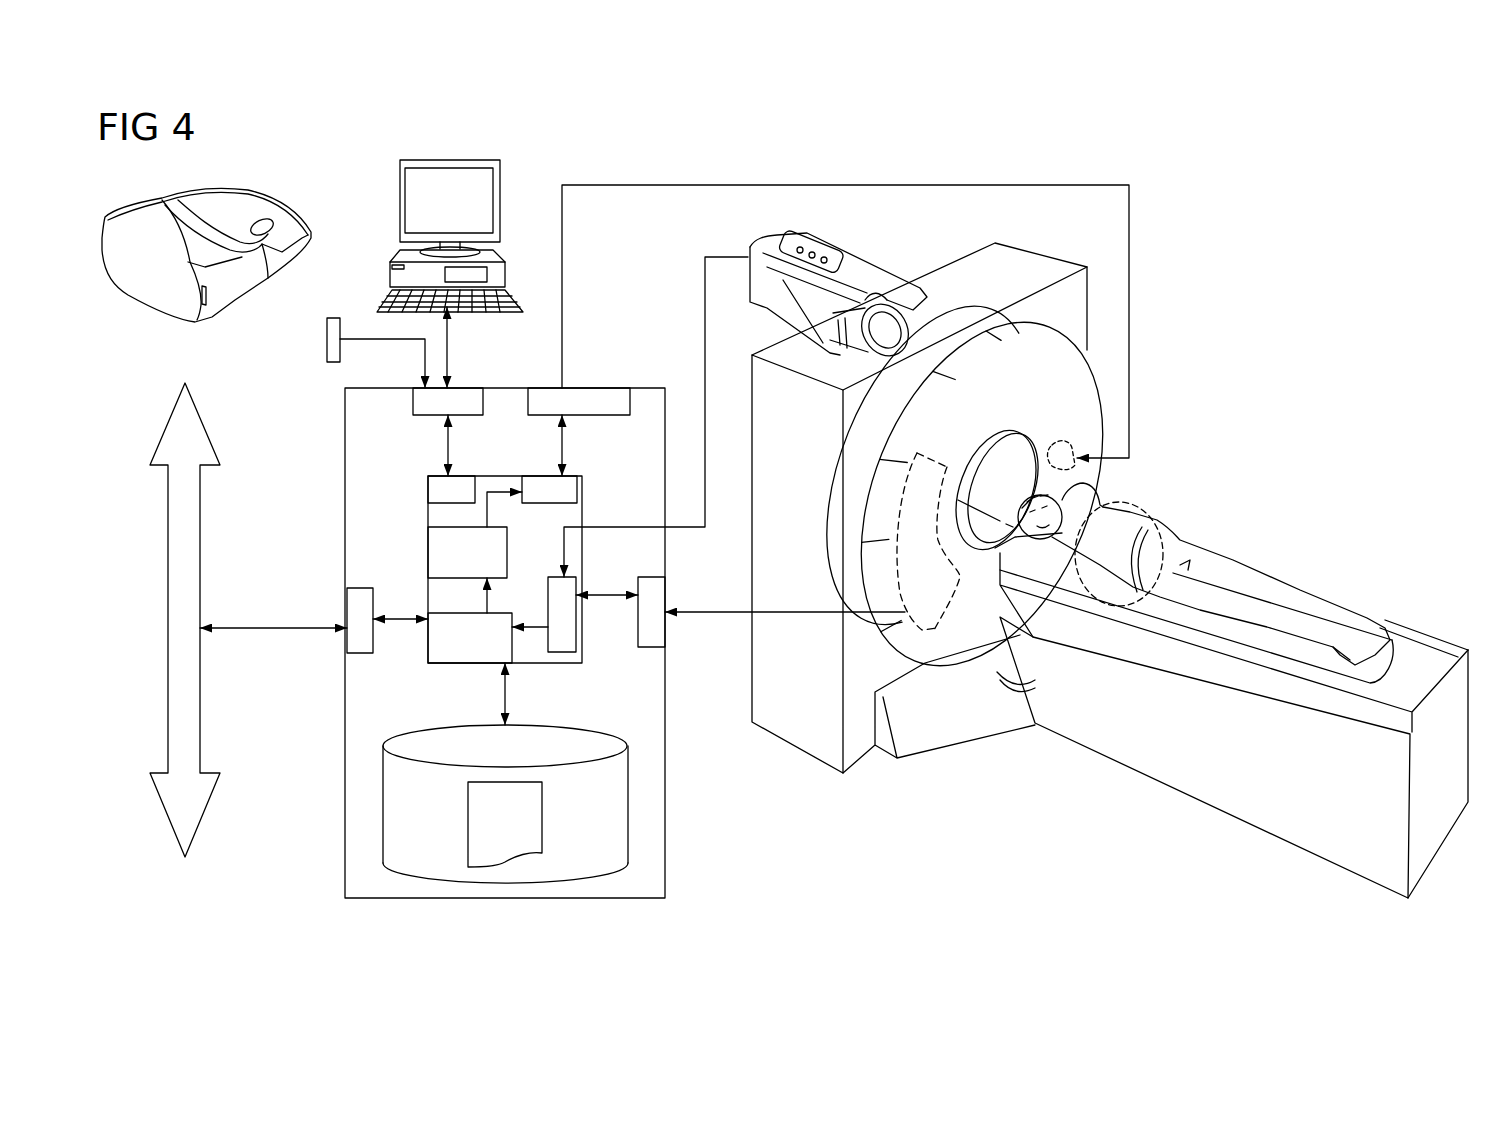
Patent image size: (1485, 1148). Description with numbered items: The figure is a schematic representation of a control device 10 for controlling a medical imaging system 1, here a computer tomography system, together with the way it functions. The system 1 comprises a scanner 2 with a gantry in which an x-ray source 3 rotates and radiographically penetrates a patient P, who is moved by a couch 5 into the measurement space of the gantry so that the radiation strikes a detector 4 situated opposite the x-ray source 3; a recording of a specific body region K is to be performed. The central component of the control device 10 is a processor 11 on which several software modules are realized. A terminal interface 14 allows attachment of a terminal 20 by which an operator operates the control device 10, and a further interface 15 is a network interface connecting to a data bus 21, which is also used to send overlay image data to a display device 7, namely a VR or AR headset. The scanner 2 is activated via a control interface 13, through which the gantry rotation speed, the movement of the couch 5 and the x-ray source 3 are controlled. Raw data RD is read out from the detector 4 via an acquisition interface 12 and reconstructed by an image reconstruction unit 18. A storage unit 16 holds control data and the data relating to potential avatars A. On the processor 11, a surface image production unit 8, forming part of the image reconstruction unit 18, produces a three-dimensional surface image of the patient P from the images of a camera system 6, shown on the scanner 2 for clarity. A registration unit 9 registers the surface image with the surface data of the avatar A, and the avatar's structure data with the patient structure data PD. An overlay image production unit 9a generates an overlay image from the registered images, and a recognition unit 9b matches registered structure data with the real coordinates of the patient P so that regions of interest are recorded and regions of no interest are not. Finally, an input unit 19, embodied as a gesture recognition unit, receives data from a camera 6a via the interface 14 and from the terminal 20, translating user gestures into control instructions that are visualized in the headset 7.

The medical imaging system 1 is at (1340, 380).
The scanner 2 is at (952, 265).
The x-ray source 3 is at (1063, 440).
The detector 4 is at (940, 596).
The couch 5 is at (1217, 805).
The camera system 6 is at (748, 258).
The camera 6a is at (327, 340).
The display device 7 is at (272, 210).
The surface image production unit 8 is at (556, 580).
The registration unit 9 is at (428, 640).
The overlay image production unit 9a is at (440, 552).
The recognition unit 9b is at (532, 478).
The control device 10 is at (505, 388).
The processor 11 is at (428, 515).
The acquisition interface 12 is at (652, 650).
The control interface 13 is at (580, 388).
The terminal interface 14 is at (413, 400).
The network interface 15 is at (360, 653).
The storage unit 16 is at (535, 735).
The image reconstruction unit 18 is at (580, 588).
The input unit 19 is at (465, 478).
The terminal 20 is at (400, 200).
The data bus 21 is at (205, 500).
The avatar A is at (530, 818).
The body region K is at (1135, 510).
The patient P is at (1222, 532).
The patient structure data PD is at (275, 628).
The raw data RD is at (707, 612).